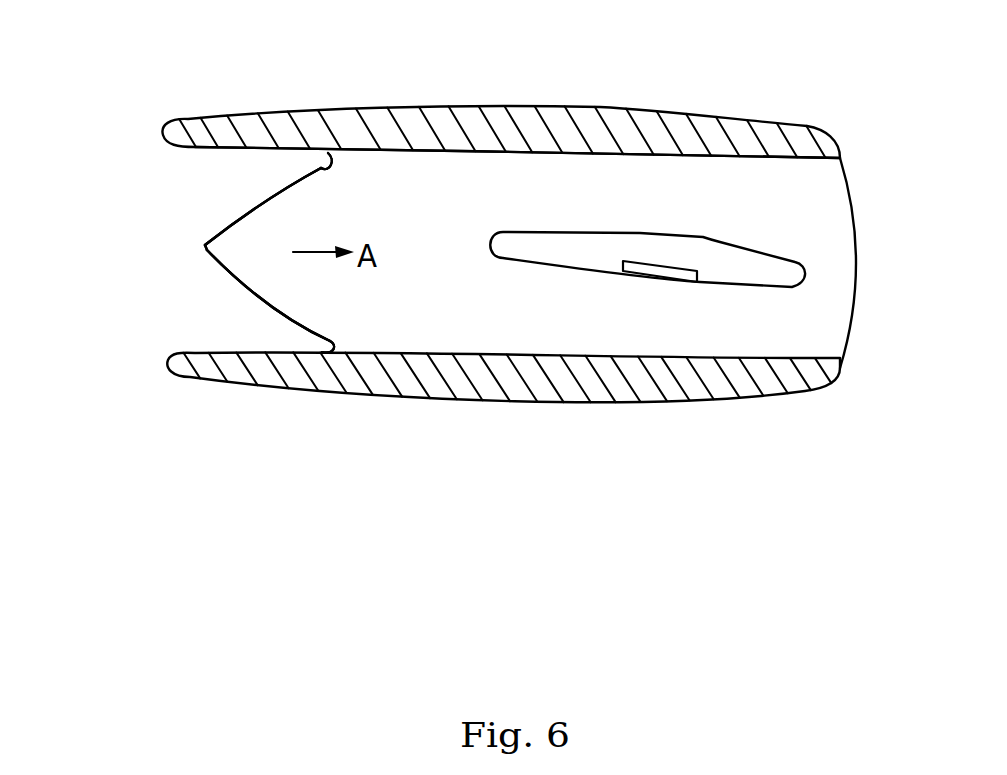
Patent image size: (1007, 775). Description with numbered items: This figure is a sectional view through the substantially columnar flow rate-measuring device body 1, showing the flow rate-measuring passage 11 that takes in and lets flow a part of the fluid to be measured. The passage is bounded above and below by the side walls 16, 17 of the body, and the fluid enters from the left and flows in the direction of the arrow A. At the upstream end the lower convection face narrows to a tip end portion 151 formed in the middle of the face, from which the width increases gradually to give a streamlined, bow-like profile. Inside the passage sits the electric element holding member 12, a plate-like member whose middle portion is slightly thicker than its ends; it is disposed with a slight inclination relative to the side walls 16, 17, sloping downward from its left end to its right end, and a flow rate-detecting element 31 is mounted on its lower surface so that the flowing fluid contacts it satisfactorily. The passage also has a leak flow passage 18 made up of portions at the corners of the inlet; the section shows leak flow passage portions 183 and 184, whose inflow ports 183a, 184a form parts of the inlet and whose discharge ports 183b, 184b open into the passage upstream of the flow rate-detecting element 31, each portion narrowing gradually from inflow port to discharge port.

The flow rate-measuring device body 1 is at (612, 118).
The flow rate-measuring passage 11 is at (433, 185).
The electric element holding member 12 is at (717, 253).
The side wall 16 is at (503, 122).
The side wall 17 is at (518, 387).
The leak flow passage 18 is at (266, 167).
The flow rate-detecting element 31 is at (677, 277).
The tip end portion 151 is at (204, 248).
The leak flow passage portion 183 is at (233, 168).
The inflow port 183a is at (198, 187).
The discharge port 183b is at (312, 165).
The leak flow passage portion 184 is at (259, 328).
The inflow port 184a is at (195, 315).
The discharge port 184b is at (324, 350).